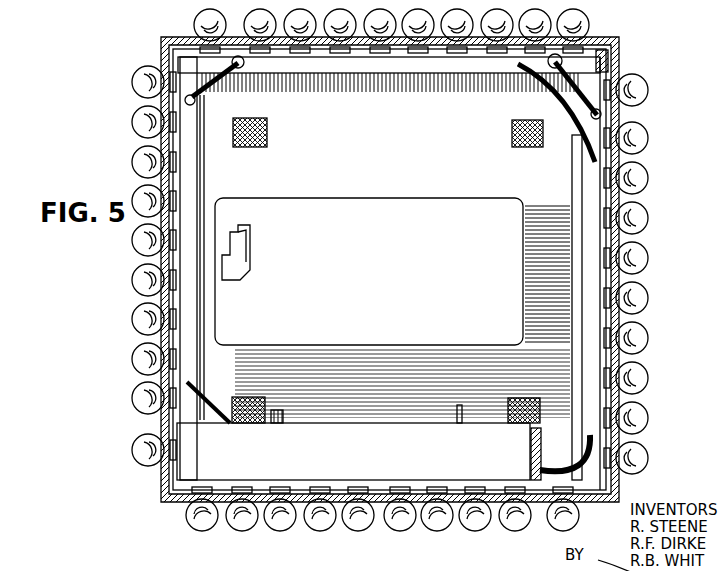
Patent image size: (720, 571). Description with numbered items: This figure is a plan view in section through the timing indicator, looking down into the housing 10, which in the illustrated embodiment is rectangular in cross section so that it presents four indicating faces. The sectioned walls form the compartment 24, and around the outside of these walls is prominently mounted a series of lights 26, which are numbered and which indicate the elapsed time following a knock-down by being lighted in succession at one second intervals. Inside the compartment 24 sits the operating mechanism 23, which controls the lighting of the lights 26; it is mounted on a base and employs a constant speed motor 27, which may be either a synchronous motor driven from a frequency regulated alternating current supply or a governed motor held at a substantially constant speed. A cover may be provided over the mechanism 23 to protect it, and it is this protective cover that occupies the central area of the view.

The housing 10 is at (622, 62).
The operating mechanism 23 is at (233, 208).
The compartment 24 is at (186, 38).
The lights 26 is at (140, 92).
The constant speed motor 27 is at (249, 243).